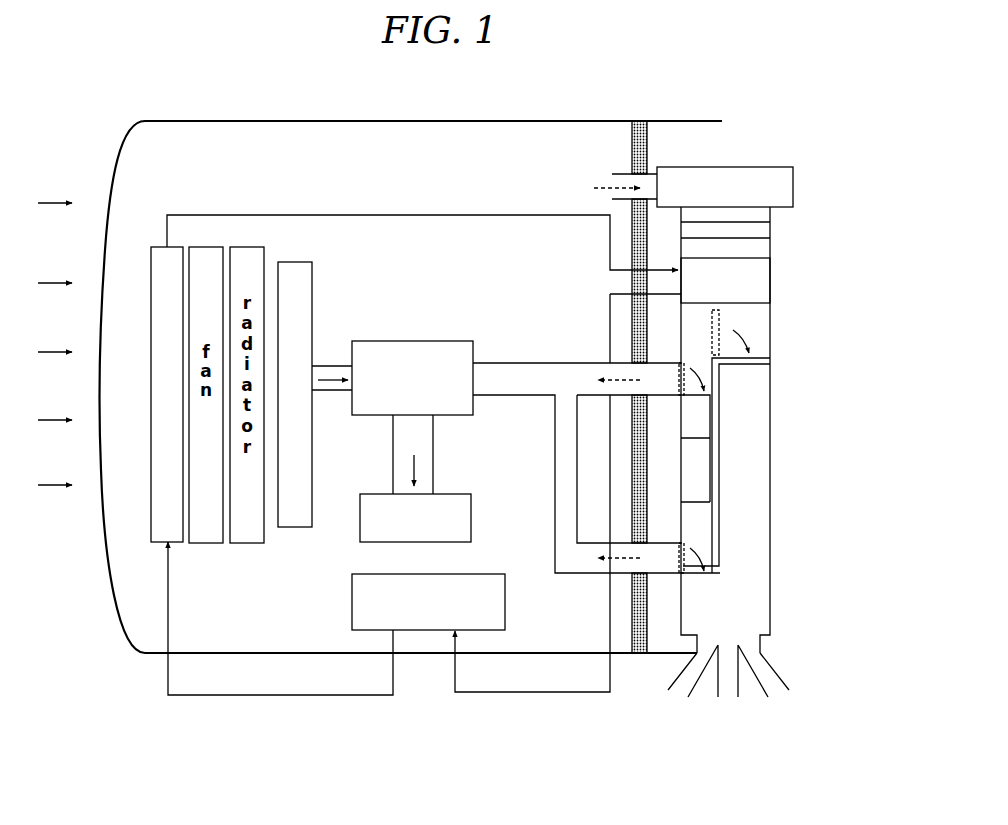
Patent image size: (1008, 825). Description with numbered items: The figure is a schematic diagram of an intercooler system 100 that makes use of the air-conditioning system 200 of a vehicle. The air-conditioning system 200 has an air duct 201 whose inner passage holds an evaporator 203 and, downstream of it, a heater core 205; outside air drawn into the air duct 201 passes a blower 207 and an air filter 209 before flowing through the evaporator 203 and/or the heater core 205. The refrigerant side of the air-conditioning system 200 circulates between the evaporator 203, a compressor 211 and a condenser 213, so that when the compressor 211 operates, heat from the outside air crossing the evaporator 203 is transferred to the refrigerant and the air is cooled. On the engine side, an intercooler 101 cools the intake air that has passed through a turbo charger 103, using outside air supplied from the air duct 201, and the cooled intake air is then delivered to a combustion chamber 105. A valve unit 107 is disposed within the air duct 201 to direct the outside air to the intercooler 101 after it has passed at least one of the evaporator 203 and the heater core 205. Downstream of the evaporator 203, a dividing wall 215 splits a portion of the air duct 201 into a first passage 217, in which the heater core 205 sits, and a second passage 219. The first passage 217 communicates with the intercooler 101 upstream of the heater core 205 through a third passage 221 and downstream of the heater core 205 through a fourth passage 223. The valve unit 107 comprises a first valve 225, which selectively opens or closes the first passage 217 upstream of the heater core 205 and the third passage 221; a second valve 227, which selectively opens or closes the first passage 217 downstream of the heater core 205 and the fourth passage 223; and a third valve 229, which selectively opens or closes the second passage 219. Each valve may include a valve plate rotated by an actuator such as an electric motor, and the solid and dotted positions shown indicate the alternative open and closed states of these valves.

The intercooler system 100 is at (393, 724).
The intercooler 101 is at (411, 341).
The turbo charger 103 is at (296, 262).
The combustion chamber 105 is at (471, 514).
The valve unit 107 is at (735, 577).
The air-conditioning system 200 is at (748, 408).
The air duct 201 is at (771, 317).
The evaporator 203 is at (760, 257).
The heater core 205 is at (705, 472).
The blower 207 is at (757, 167).
The air filter 209 is at (760, 222).
The compressor 211 is at (505, 602).
The condenser 213 is at (152, 249).
The dividing wall 215 is at (718, 517).
The first passage 217 is at (693, 418).
The second passage 219 is at (759, 565).
The third passage 221 is at (654, 378).
The fourth passage 223 is at (658, 565).
The first valve 225 is at (700, 396).
The second valve 227 is at (700, 576).
The third valve 229 is at (745, 365).